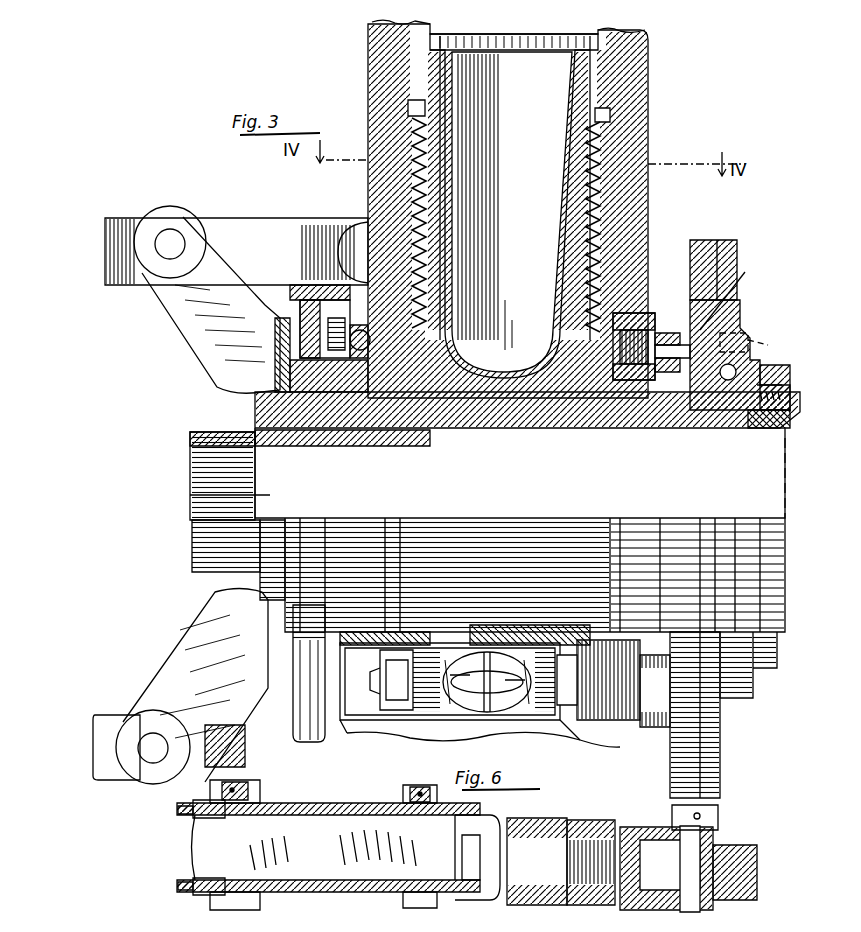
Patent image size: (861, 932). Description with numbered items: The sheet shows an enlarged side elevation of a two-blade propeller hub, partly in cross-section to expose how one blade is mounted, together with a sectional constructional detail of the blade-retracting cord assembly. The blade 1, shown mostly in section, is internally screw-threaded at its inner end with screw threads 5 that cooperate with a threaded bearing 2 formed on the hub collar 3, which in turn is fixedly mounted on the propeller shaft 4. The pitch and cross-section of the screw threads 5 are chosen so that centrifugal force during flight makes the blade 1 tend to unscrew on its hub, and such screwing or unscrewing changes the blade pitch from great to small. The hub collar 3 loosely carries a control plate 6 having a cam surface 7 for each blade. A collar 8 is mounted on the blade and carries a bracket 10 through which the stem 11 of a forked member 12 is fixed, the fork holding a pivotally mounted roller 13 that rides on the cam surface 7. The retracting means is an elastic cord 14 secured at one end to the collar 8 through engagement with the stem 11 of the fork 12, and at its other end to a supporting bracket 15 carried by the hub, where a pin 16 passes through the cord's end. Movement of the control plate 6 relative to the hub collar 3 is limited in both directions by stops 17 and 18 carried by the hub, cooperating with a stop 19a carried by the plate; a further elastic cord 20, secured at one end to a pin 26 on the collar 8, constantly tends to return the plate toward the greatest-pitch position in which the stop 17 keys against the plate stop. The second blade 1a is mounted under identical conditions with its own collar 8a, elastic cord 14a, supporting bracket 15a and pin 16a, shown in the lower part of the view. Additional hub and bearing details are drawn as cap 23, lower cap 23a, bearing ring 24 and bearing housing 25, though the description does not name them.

In FIG. 3, the blade 1 is at (648, 82).
In FIG. 3, the blade 1a is at (610, 730).
In FIG. 3, the threaded bearing 2 is at (585, 186).
In FIG. 3, the hub collar 3 is at (515, 420).
In FIG. 3, the propeller shaft 4 is at (487, 563).
In FIG. 3, the internal screw threads 5 is at (410, 188).
In FIG. 3, the control plate 6 is at (735, 304).
In FIG. 3, the cam surface 7 is at (710, 250).
In FIG. 3, the collar 8 is at (640, 312).
In FIG. 3, the collar 8a is at (598, 750).
In FIG. 6, the bracket 10 is at (545, 820).
In FIG. 6, the stem 11 is at (588, 836).
In FIG. 3, the forked member 12 is at (650, 742).
In FIG. 6, the forked member 12 is at (638, 826).
In FIG. 3, the roller 13 is at (658, 691).
In FIG. 6, the roller 13 is at (748, 860).
In FIG. 3, the elastic cord 14 is at (278, 225).
In FIG. 6, the elastic cord 14 is at (350, 880).
In FIG. 3, the elastic cord 14a is at (225, 752).
In FIG. 3, the bracket 15 is at (182, 300).
In FIG. 6, the bracket 15 is at (265, 808).
In FIG. 3, the bracket 15a is at (175, 668).
In FIG. 3, the pin 16 is at (178, 240).
In FIG. 6, the pin 16 is at (215, 895).
In FIG. 3, the pin 16a is at (148, 762).
In FIG. 3, the stop 17 is at (750, 336).
In FIG. 3, the stop 18 is at (762, 348).
In FIG. 3, the stop 19a is at (770, 385).
In FIG. 3, the elastic cord 20 is at (737, 292).
In FIG. 3, the cap 23 is at (312, 285).
In FIG. 3, the lower cap 23a is at (308, 735).
In FIG. 3, the bearing ring 24 is at (296, 298).
In FIG. 3, the bearing housing 25 is at (300, 318).
In FIG. 3, the pin 26 is at (665, 340).